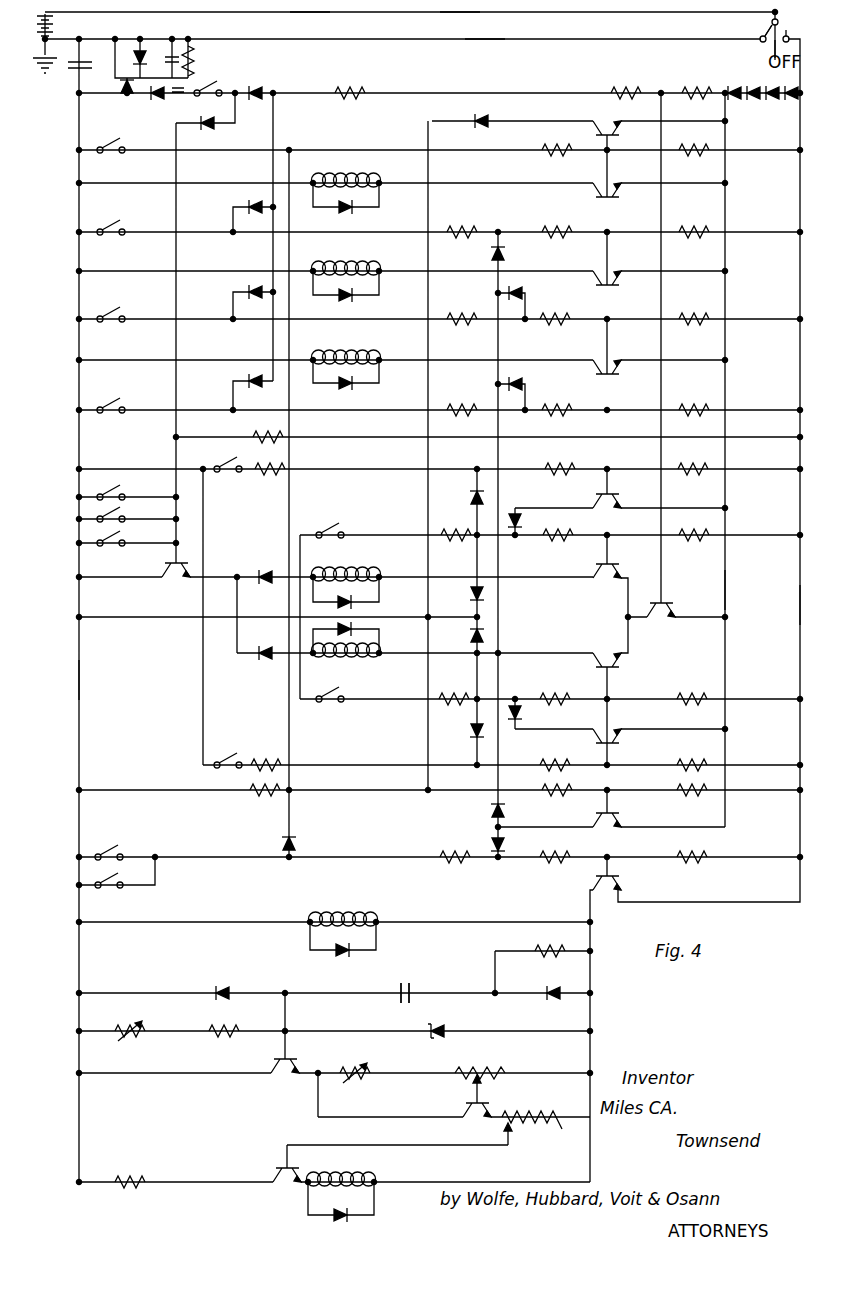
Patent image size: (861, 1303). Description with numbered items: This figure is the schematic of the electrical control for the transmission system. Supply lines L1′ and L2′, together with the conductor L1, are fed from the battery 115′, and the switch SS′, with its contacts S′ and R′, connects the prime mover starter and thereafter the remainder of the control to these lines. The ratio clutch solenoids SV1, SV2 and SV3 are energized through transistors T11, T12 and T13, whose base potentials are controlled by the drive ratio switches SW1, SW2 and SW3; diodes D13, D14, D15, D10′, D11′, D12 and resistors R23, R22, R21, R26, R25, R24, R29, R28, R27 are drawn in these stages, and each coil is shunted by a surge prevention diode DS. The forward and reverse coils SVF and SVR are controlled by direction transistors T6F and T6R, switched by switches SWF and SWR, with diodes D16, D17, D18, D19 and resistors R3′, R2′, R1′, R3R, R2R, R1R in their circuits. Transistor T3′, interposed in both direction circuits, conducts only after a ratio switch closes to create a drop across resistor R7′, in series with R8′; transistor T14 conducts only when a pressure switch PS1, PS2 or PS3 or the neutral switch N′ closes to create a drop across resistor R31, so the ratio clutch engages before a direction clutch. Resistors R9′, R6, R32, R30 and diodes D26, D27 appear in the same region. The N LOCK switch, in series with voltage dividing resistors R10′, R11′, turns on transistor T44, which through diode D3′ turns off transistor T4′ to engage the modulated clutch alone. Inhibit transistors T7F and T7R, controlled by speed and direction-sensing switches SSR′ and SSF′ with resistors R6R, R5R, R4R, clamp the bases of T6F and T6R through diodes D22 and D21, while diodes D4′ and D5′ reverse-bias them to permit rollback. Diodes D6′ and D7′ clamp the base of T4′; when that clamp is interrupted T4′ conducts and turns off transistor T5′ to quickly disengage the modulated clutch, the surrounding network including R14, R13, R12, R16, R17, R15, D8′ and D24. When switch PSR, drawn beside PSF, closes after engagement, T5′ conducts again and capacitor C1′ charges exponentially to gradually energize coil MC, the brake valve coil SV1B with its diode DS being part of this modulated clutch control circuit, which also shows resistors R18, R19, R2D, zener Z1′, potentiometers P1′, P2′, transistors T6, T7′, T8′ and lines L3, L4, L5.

The battery 115′ is at (54, 25).
The supply line L1′ is at (322, 12).
The supply line L1 is at (448, 12).
The supply line L2′ is at (470, 39).
The switch contact S′ is at (758, 24).
The switch SS′ is at (789, 31).
The switch position R′ is at (787, 53).
The neutral switch N′ is at (213, 87).
The diode D26 is at (258, 86).
The resistor R9′ is at (350, 81).
The resistor R8′ is at (626, 82).
The resistor R7′ is at (697, 82).
The diode D3′ is at (476, 118).
The transistor T44 is at (602, 125).
The voltage dividing resistor R11′ is at (561, 140).
The voltage dividing resistor R10′ is at (698, 140).
The N-lock switch N LOCK is at (122, 134).
The diode D27 is at (211, 127).
The ratio clutch solenoid SV1 is at (345, 175).
The inductive surge prevention diode DS is at (325, 1224).
The transistor T11 is at (604, 187).
The drive ratio switch SW1 is at (116, 216).
The diode D13 is at (250, 205).
The resistor R23 is at (464, 223).
The resistor R22 is at (558, 223).
The resistor R21 is at (697, 223).
The ratio clutch solenoid SV2 is at (345, 263).
The diode D10′ is at (505, 255).
The transistor T12 is at (604, 275).
The drive ratio switch SW2 is at (116, 303).
The diode D14 is at (250, 290).
The diode D11′ is at (523, 290).
The resistor R26 is at (462, 310).
The resistor R25 is at (559, 310).
The resistor R24 is at (696, 310).
The ratio clutch solenoid SV3 is at (345, 352).
The transistor T13 is at (604, 364).
The drive ratio switch SW3 is at (116, 394).
The diode D15 is at (250, 379).
The diode D12 is at (521, 381).
The resistor R29 is at (462, 400).
The resistor R28 is at (560, 400).
The resistor R27 is at (692, 400).
The resistor R31 is at (264, 428).
The speed and direction-sensing switch SSR′ is at (228, 462).
The resistor R6 is at (268, 480).
The resistor R32 is at (557, 459).
The resistor R30 is at (135, 1175).
The pressure switch PS1 is at (132, 488).
The pressure switch PS2 is at (132, 511).
The pressure switch PS3 is at (133, 535).
The diode D4′ is at (472, 497).
The diode D22 is at (510, 516).
The inhibit transistor T7F is at (596, 488).
The forward direction switch SWF is at (333, 526).
The diode D16 is at (262, 570).
The forward solenoid coil SVF is at (345, 569).
The resistor R3′ is at (454, 546).
The resistor R2′ is at (548, 541).
The forward direction control transistor T6F is at (616, 556).
The resistor R1′ is at (686, 541).
The transistor T14 is at (168, 585).
The diode D18 is at (219, 989).
The diode D19 is at (550, 989).
The diode D6′ is at (485, 597).
The diode D7′ is at (483, 631).
The transistor T3′ is at (670, 600).
The line L4 is at (732, 583).
The line L3 is at (806, 605).
The diode D17 is at (260, 662).
The reverse solenoid coil SVR is at (340, 661).
The reverse direction switch SWR is at (331, 705).
The reverse direction control transistor T6R is at (622, 662).
The resistor R3R is at (452, 689).
The resistor R2R is at (555, 689).
The resistor R1R is at (688, 689).
The diode D21 is at (522, 714).
The inhibit transistor T7R is at (612, 733).
The diode D5′ is at (470, 740).
The resistor R5R is at (555, 755).
The resistor R4R is at (688, 755).
The line L5 is at (74, 681).
The speed and direction-sensing switch SSF′ is at (228, 758).
The resistor R6R is at (267, 756).
The resistor R14 is at (258, 801).
The resistor R13 is at (560, 800).
The transistor T4′ is at (612, 816).
The resistor R12 is at (689, 803).
The diode D8′ is at (490, 812).
The resistor R16 is at (560, 847).
The resistor R17 is at (452, 865).
The modulated clutch control transistor T5′ is at (612, 877).
The resistor R15 is at (688, 866).
The diode D24 is at (293, 836).
The switch PSF is at (112, 848).
The pressure switch PSR is at (110, 890).
The brake valve solenoid coil SV1B is at (343, 914).
The capacitor C1′ is at (412, 985).
The resistor R18 is at (541, 943).
The zener diode Z1′ is at (443, 1025).
The variable resistor R2D is at (125, 1040).
The resistor R19 is at (226, 1042).
The transistor T6 is at (282, 1080).
The potentiometer P1′ is at (486, 1068).
The transistor T7′ is at (462, 1103).
The potentiometer P2′ is at (528, 1115).
The transistor T8′ is at (270, 1167).
The modulated clutch coil MC is at (345, 1174).